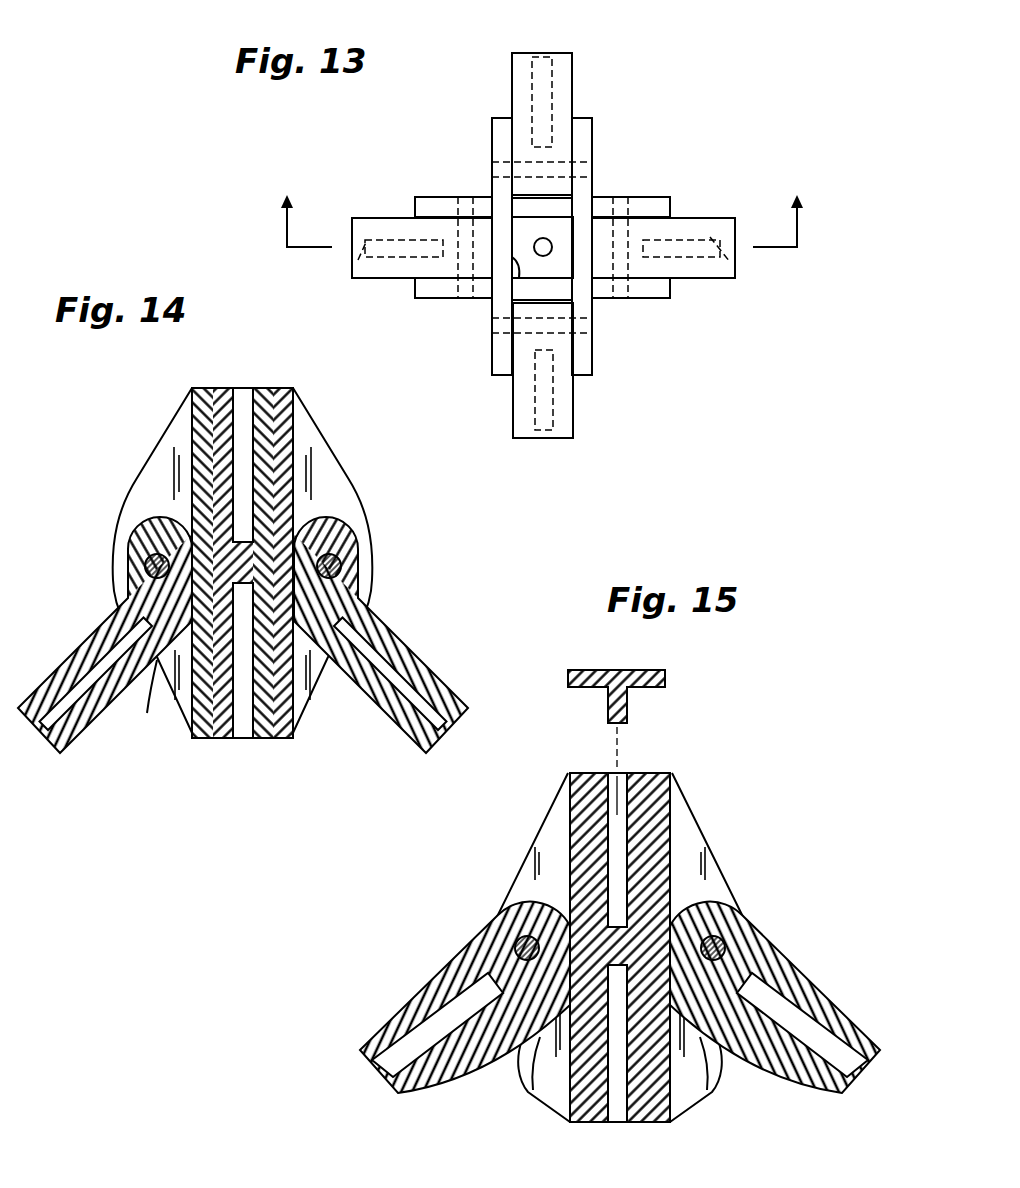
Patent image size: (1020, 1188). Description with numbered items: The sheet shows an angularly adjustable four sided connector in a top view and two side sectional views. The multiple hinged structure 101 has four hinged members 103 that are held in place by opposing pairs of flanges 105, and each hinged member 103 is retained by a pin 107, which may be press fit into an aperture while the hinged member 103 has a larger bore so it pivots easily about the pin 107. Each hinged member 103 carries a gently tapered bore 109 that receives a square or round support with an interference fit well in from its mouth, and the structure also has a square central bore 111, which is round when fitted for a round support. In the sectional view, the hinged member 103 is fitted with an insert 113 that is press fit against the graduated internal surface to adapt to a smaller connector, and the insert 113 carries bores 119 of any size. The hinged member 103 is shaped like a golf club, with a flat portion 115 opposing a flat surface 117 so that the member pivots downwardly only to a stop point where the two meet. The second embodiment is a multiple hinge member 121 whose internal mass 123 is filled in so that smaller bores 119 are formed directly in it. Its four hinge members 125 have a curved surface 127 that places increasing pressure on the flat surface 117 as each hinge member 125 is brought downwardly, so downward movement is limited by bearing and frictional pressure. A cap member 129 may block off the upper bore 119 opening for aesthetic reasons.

In FIG. 13, the multiple hinged structure 101 is at (664, 141).
In FIG. 14, the multiple hinged structure 101 is at (184, 394).
In FIG. 13, the hinged member 103 is at (572, 73).
In FIG. 14, the hinged member 103 is at (100, 633).
In FIG. 13, the flange 105 is at (493, 118).
In FIG. 14, the flange 105 is at (145, 482).
In FIG. 15, the flange 105 is at (513, 882).
In FIG. 13, the pin 107 is at (460, 197).
In FIG. 14, the pin 107 is at (145, 562).
In FIG. 15, the pin 107 is at (520, 941).
In FIG. 13, the bore 109 is at (533, 63).
In FIG. 14, the bore 109 is at (50, 741).
In FIG. 15, the bore 109 is at (387, 1073).
In FIG. 13, the square central bore 111 is at (520, 278).
In FIG. 14, the insert 113 is at (225, 388).
In FIG. 14, the flat portion 115 is at (193, 580).
In FIG. 14, the flat surface 117 is at (150, 703).
In FIG. 14, the bore 119 is at (252, 724).
In FIG. 15, the bore 119 is at (613, 777).
In FIG. 15, the multiple hinge member 121 is at (498, 837).
In FIG. 15, the internal mass 123 is at (637, 949).
In FIG. 15, the hinge member 125 is at (793, 978).
In FIG. 15, the curved surface 127 is at (538, 1090).
In FIG. 15, the cap member 129 is at (633, 668).